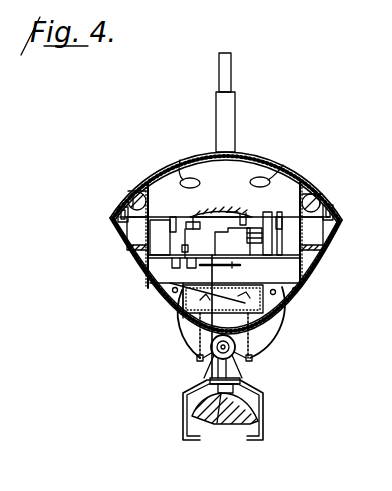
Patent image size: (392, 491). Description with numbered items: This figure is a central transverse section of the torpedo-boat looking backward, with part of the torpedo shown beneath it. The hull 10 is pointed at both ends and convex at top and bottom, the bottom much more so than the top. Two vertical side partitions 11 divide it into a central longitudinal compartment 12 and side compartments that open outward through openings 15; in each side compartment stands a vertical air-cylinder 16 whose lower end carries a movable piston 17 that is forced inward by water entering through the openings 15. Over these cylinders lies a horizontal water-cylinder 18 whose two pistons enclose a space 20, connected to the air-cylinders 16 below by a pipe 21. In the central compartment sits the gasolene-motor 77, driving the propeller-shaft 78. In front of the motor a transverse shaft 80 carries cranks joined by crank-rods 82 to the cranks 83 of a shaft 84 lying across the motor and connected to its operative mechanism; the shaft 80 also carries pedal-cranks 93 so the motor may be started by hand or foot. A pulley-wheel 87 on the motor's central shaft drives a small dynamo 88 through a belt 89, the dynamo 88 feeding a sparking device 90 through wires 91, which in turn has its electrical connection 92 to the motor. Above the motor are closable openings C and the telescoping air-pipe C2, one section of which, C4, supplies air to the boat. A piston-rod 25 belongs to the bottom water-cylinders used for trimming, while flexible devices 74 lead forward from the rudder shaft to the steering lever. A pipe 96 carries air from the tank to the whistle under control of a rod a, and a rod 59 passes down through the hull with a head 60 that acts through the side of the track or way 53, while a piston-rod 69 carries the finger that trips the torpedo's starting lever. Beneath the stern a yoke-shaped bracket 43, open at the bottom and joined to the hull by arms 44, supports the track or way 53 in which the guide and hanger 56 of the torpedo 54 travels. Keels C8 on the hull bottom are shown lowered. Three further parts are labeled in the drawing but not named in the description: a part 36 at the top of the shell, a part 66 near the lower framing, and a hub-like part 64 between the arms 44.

The air-pipe section C4 is at (233, 75).
The air-pipe C2 is at (226, 118).
The hull 10 is at (227, 239).
The upper shell 36 is at (273, 167).
The piston 17 is at (116, 233).
The openings C is at (176, 165).
The pipe 21 is at (113, 214).
The openings 15 is at (142, 265).
The flexible devices 74 is at (142, 283).
The side partitions 11 is at (155, 190).
The water-cylinder 18 is at (142, 187).
The space 20 is at (130, 196).
The propeller-shaft 78 is at (320, 198).
The air-cylinders 16 is at (225, 233).
The central longitudinal compartment 12 is at (221, 204).
The shaft 84 is at (229, 211).
The cranks 83 is at (173, 216).
The dynamo 88 is at (193, 216).
The belt 89 is at (188, 236).
The crank-rods 82 is at (178, 242).
The wires 91 is at (243, 213).
The sparking device 90 is at (267, 212).
The electrical connection 92 is at (254, 243).
The gasolene-motor 77 is at (242, 252).
The pulley-wheel 87 is at (182, 270).
The shaft 80 is at (198, 269).
The pedal-cranks 93 is at (220, 271).
The piston-rod 69 is at (240, 371).
The piston-rod 25 is at (223, 299).
The pivot 66 is at (172, 291).
The pipe 96 is at (275, 294).
The rod a is at (298, 292).
The rod 59 is at (178, 312).
The arms 44 is at (190, 338).
The keels C8 is at (196, 357).
The hub 64 is at (210, 357).
The head 60 is at (210, 392).
The track or way 53 is at (240, 387).
The bracket 43 is at (188, 390).
The torpedo 54 is at (253, 413).
The guide and hanger 56 is at (221, 400).